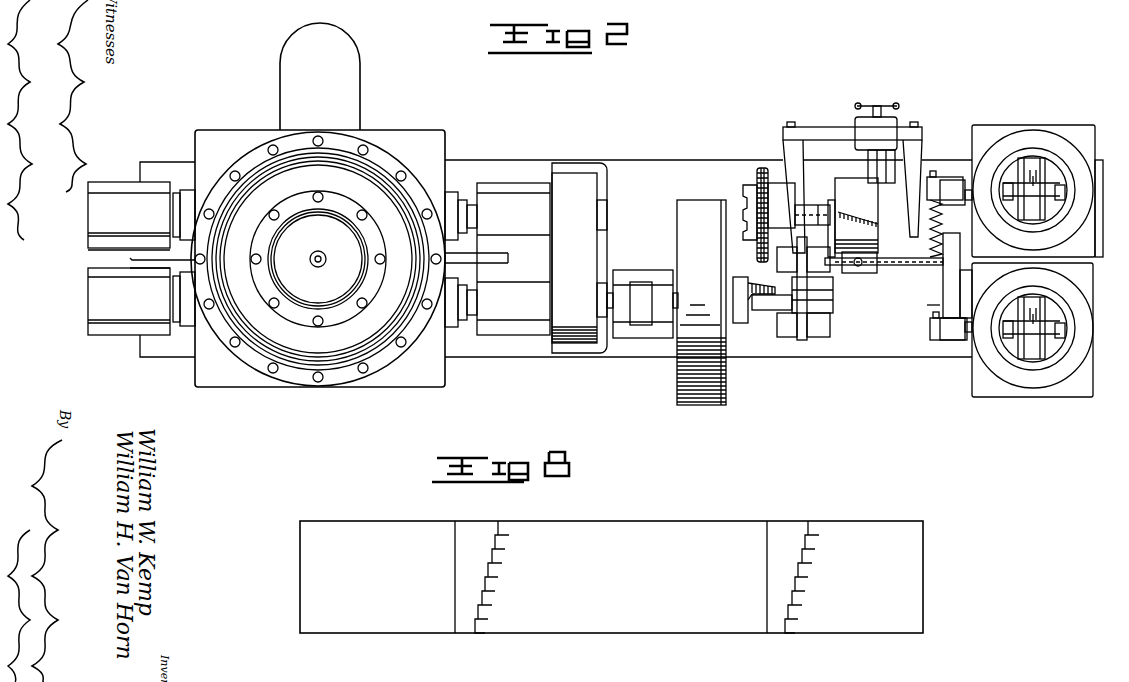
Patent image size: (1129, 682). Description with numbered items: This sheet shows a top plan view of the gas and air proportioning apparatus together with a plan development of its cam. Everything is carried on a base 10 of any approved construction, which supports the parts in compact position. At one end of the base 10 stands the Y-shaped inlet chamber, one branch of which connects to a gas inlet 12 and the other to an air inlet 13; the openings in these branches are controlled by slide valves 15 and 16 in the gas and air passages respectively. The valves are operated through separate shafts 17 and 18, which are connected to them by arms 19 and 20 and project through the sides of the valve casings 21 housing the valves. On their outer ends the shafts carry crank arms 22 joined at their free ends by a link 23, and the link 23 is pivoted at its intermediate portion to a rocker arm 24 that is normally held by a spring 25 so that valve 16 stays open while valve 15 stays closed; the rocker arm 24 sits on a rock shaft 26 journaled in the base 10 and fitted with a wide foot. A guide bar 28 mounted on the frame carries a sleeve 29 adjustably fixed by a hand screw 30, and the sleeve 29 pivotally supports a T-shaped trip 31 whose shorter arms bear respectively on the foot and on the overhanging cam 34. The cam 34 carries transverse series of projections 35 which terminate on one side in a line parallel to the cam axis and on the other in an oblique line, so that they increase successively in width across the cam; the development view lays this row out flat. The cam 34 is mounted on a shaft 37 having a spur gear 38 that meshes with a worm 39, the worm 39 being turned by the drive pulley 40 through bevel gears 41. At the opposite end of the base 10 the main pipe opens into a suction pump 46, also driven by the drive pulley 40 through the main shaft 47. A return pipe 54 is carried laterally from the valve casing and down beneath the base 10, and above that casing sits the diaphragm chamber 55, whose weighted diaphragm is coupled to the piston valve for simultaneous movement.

In FIG. 2, the base 10 is at (848, 348).
In FIG. 2, the gas inlet 12 is at (1033, 368).
In FIG. 2, the air inlet 13 is at (1036, 155).
In FIG. 2, the slide valve 15 is at (1020, 300).
In FIG. 2, the slide valve 16 is at (1032, 208).
In FIG. 2, the shaft 17 is at (968, 312).
In FIG. 2, the shaft 18 is at (1003, 162).
In FIG. 2, the arm 19 is at (1040, 316).
In FIG. 2, the arm 20 is at (1040, 178).
In FIG. 2, the valve casings 21 is at (975, 376).
In FIG. 2, the crank arms 22 is at (931, 325).
In FIG. 2, the link 23 is at (938, 302).
In FIG. 2, the rocker arm 24 is at (940, 274).
In FIG. 2, the spring 25 is at (928, 258).
In FIG. 2, the rock shaft 26 is at (905, 268).
In FIG. 2, the guide bar 28 is at (830, 118).
In FIG. 2, the sleeve 29 is at (890, 133).
In FIG. 2, the hand screw 30 is at (877, 106).
In FIG. 2, the trip 31 is at (876, 172).
In FIG. 2, the cam 34 is at (856, 215).
In FIG. 8, the cam 34 is at (611, 577).
In FIG. 2, the projections 35 is at (830, 216).
In FIG. 2, the shaft 37 is at (831, 202).
In FIG. 2, the spur gear 38 is at (762, 168).
In FIG. 2, the worm 39 is at (743, 202).
In FIG. 2, the drive pulley 40 is at (677, 249).
In FIG. 2, the bevel gears 41 is at (735, 285).
In FIG. 2, the suction pump 46 is at (445, 158).
In FIG. 2, the main shaft 47 is at (612, 312).
In FIG. 2, the return pipe 54 is at (320, 76).
In FIG. 2, the diaphragm chamber 55 is at (318, 259).